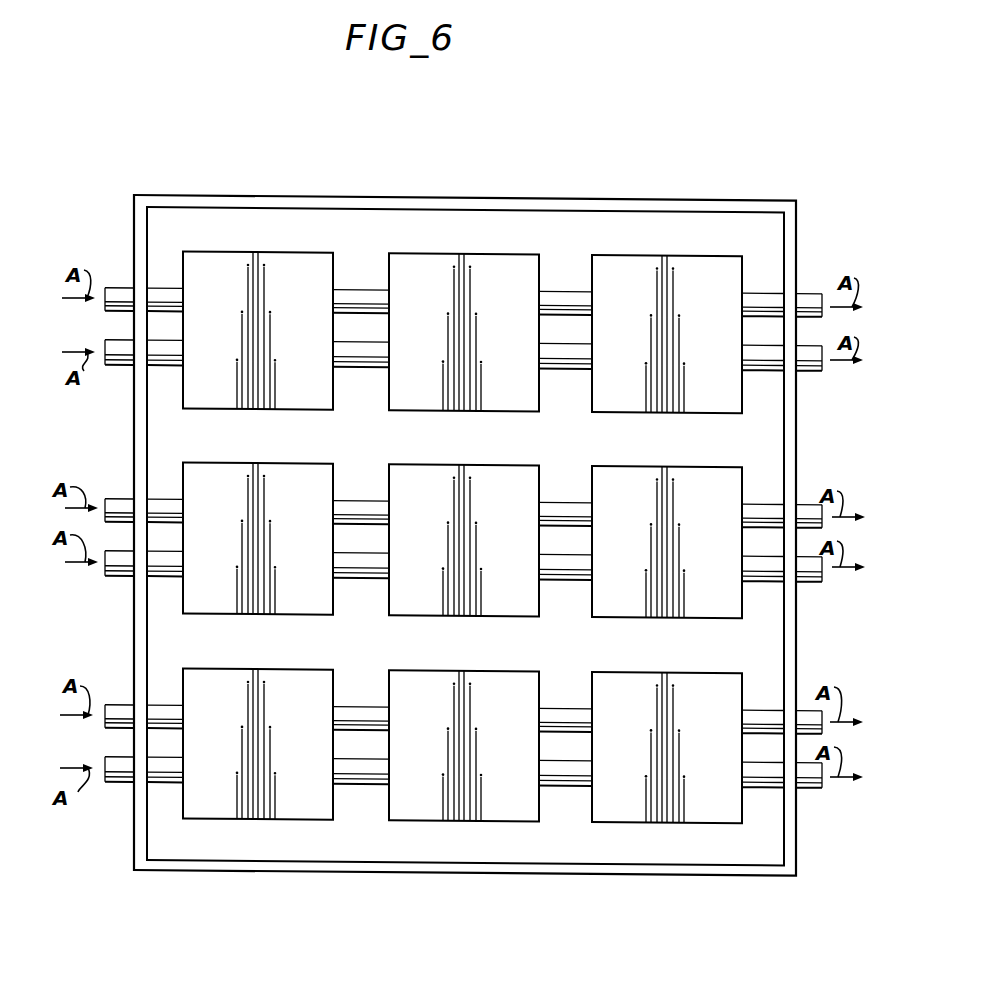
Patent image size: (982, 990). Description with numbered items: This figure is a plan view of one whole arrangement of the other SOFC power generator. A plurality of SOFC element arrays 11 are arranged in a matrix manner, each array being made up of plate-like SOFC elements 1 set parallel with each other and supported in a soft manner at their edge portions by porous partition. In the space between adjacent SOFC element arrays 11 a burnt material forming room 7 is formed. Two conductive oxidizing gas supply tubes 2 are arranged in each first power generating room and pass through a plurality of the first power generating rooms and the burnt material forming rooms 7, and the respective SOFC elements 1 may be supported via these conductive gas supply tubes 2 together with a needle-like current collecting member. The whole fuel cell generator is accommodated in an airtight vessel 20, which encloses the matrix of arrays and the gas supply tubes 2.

The SOFC element 1 is at (287, 260).
The SOFC element array 11 is at (202, 249).
The conductive oxidizing gas supply tube 2 is at (108, 340).
The burnt material forming room 7 is at (565, 242).
The airtight vessel 20 is at (605, 196).